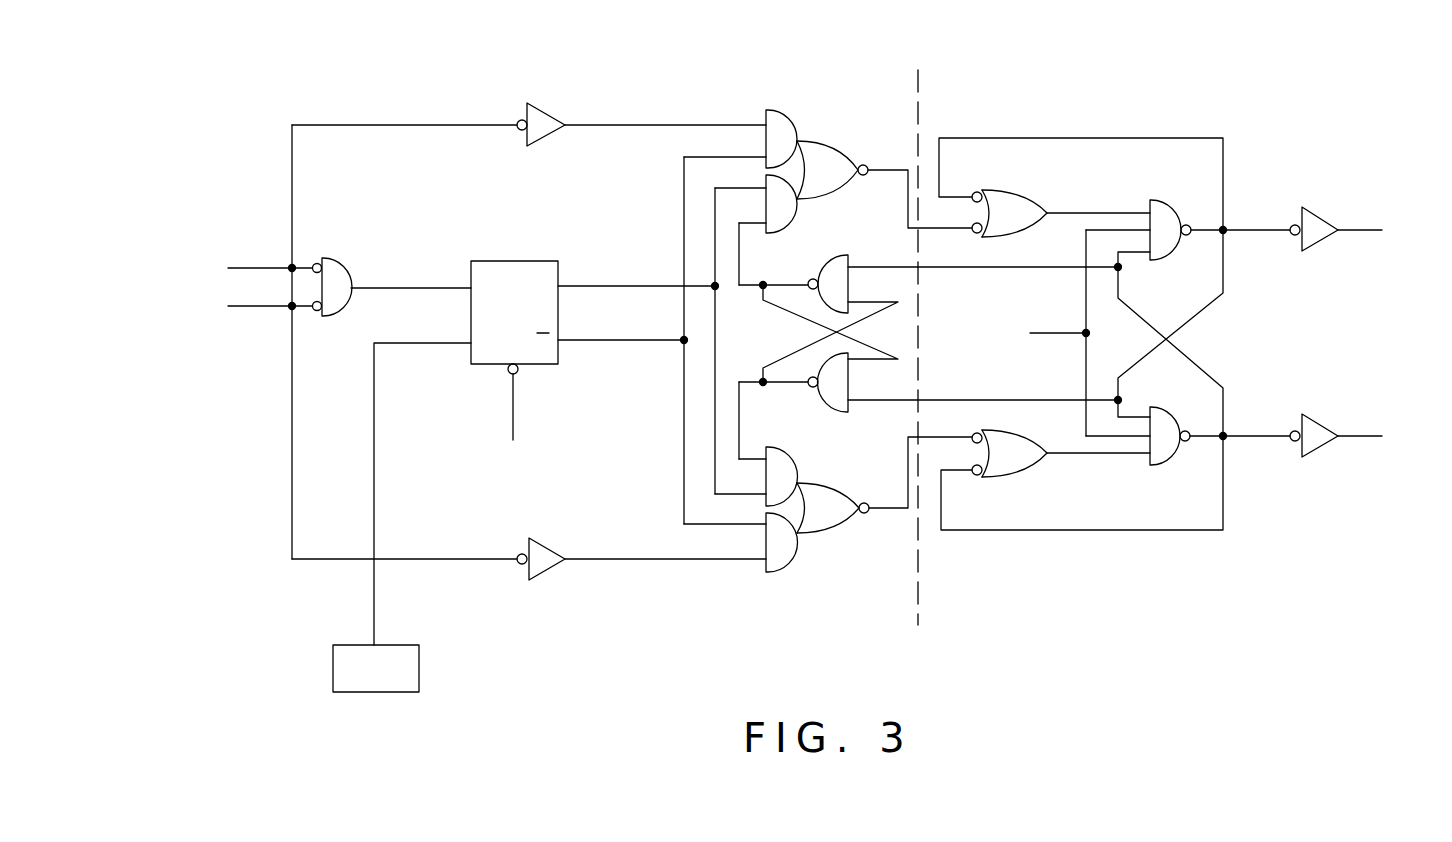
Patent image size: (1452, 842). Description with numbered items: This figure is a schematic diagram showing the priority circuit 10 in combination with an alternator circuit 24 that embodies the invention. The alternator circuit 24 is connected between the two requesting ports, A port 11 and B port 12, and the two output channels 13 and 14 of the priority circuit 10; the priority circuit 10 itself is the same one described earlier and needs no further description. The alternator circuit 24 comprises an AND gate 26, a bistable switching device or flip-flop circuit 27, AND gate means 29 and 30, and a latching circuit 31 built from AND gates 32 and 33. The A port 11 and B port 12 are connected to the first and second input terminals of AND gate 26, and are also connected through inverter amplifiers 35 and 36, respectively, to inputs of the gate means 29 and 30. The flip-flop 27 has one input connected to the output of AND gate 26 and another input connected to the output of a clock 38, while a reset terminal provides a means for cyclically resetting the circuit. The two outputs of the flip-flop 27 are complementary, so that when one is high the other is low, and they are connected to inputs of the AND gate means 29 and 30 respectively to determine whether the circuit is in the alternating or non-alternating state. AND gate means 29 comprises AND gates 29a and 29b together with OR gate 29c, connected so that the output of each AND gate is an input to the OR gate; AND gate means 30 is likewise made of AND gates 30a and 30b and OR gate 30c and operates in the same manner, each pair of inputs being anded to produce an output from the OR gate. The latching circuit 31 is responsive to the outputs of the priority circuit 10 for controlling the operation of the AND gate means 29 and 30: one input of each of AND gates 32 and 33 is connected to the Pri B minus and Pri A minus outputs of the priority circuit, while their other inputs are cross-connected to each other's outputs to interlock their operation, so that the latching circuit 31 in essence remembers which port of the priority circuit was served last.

The priority circuit 10 is at (1078, 118).
The A port 11 is at (262, 253).
The B port 12 is at (262, 320).
The output channel 13 is at (1352, 213).
The output channel 14 is at (1355, 462).
The alternator circuit 24 is at (665, 110).
The AND gate 26 is at (343, 258).
The flip-flop circuit 27 is at (497, 261).
The AND gate means 29 is at (828, 165).
The AND gate 29a is at (772, 110).
The AND gate 29b is at (780, 228).
The OR gate 29c is at (838, 157).
The AND gate means 30 is at (828, 523).
The AND gate 30a is at (780, 570).
The AND gate 30b is at (790, 470).
The OR gate 30c is at (840, 530).
The latching circuit 31 is at (928, 348).
The AND gate 32 is at (830, 258).
The AND gate 33 is at (828, 394).
The inverter amplifier 35 is at (541, 108).
The inverter amplifier 36 is at (545, 578).
The clock 38 is at (420, 675).